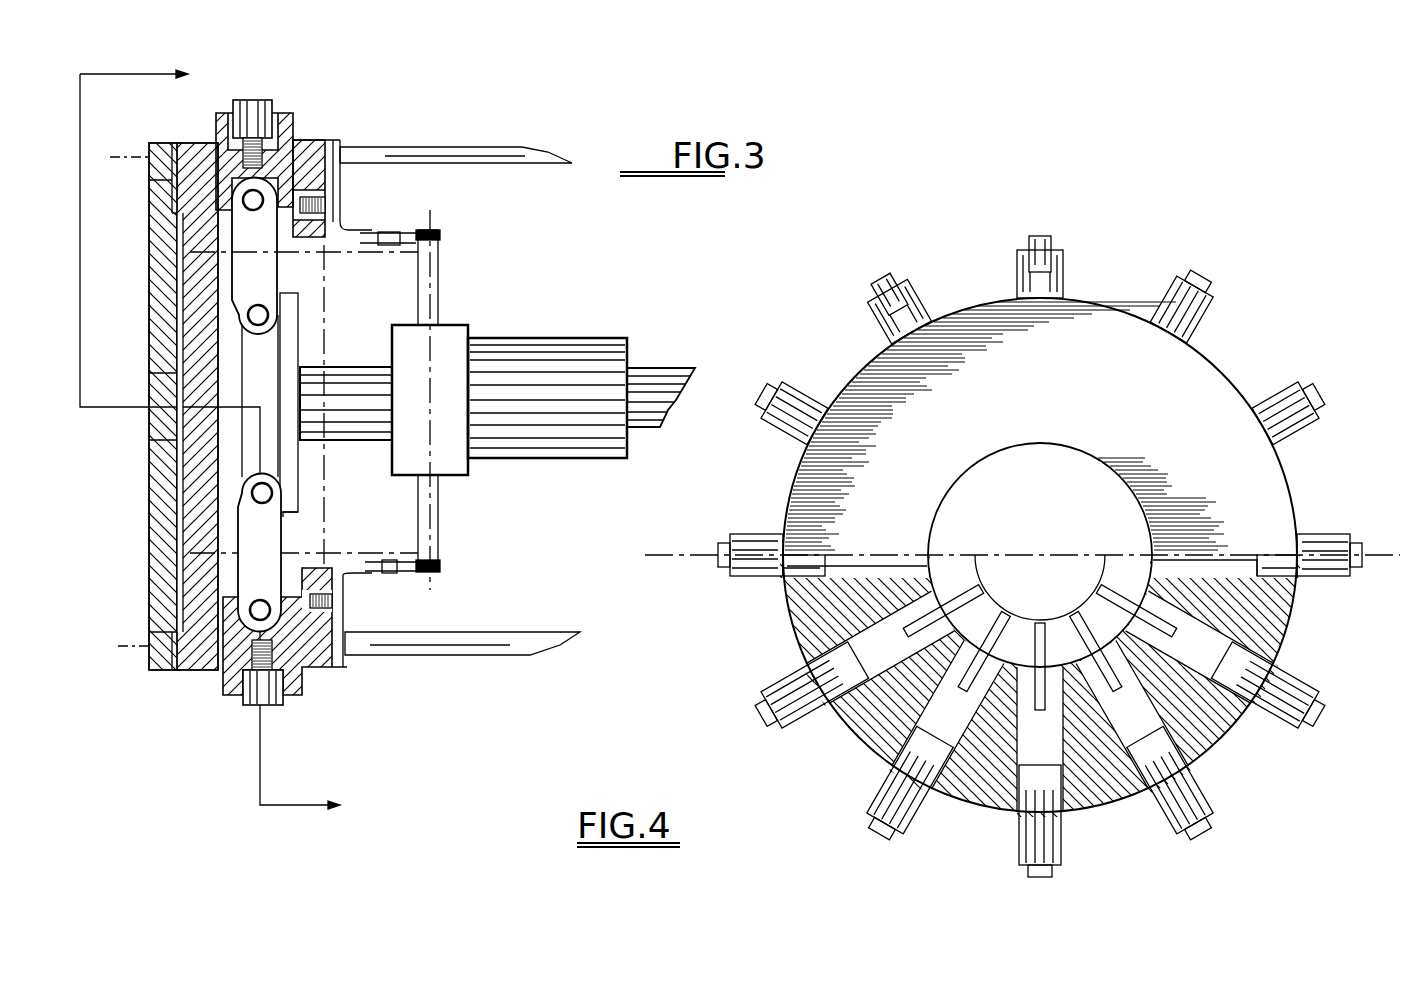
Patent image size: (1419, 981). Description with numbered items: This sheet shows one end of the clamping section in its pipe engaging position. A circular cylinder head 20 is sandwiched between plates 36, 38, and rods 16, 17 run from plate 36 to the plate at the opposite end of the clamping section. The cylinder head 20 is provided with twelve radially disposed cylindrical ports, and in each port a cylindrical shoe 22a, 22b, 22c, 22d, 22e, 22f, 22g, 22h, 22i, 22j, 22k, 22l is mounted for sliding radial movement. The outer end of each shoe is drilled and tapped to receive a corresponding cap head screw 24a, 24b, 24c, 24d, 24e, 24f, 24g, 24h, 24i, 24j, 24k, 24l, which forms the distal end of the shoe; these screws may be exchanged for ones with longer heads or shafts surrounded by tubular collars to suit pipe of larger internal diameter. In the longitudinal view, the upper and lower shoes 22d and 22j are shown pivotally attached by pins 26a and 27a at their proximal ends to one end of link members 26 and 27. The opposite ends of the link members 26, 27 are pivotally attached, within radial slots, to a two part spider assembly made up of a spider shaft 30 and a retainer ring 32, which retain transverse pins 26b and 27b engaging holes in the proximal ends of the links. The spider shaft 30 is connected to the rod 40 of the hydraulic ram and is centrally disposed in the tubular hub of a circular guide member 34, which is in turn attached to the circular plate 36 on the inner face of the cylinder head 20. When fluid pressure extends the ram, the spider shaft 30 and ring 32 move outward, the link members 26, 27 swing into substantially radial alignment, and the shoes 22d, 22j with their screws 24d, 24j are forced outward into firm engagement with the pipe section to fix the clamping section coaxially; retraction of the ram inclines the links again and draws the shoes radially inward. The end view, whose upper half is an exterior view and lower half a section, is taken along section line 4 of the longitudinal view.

In FIG. 3, the section line 4— 4 is at (225, 440).
In FIG. 3, the rod 16 is at (483, 148).
In FIG. 3, the rod 17 is at (487, 648).
In FIG. 4, the circular cylinder head 20 is at (1270, 618).
In FIG. 4, the cylindrical shoe 22a is at (768, 540).
In FIG. 4, the cylindrical shoe 22b is at (798, 410).
In FIG. 4, the cylindrical shoe 22c is at (915, 318).
In FIG. 3, the cylindrical shoe 22d is at (295, 132).
In FIG. 4, the cylindrical shoe 22d is at (1063, 278).
In FIG. 4, the cylindrical shoe 22e is at (1200, 310).
In FIG. 4, the cylindrical shoe 22f is at (1296, 418).
In FIG. 4, the cylindrical shoe 22g is at (1316, 565).
In FIG. 4, the cylindrical shoe 22h is at (1290, 708).
In FIG. 4, the cylindrical shoe 22i is at (1167, 808).
In FIG. 3, the cylindrical shoe 22j is at (301, 675).
In FIG. 4, the cylindrical shoe 22j is at (1024, 846).
In FIG. 4, the cylindrical shoe 22k is at (898, 797).
In FIG. 4, the cylindrical shoe 22l is at (792, 668).
In FIG. 4, the cap head screw 24a is at (722, 572).
In FIG. 4, the cap head screw 24b is at (762, 407).
In FIG. 4, the cap head screw 24c is at (878, 284).
In FIG. 3, the cap head screw 24d is at (253, 112).
In FIG. 4, the cap head screw 24d is at (1033, 255).
In FIG. 4, the cap head screw 24e is at (1198, 280).
In FIG. 4, the cap head screw 24f is at (1313, 396).
In FIG. 4, the cap head screw 24g is at (1362, 543).
In FIG. 4, the cap head screw 24h is at (1318, 713).
In FIG. 4, the cap head screw 24i is at (1200, 825).
In FIG. 3, the cap head screw 24j is at (245, 705).
In FIG. 4, the cap head screw 24j is at (1036, 872).
In FIG. 4, the cap head screw 24k is at (877, 833).
In FIG. 4, the cap head screw 24l is at (762, 718).
In FIG. 3, the link member 26 is at (258, 264).
In FIG. 3, the pin 26a is at (300, 205).
In FIG. 3, the transverse pin 26b is at (290, 320).
In FIG. 3, the link member 27 is at (268, 542).
In FIG. 4, the link member 27 is at (1043, 638).
In FIG. 3, the pin 27a is at (300, 602).
In FIG. 3, the transverse pin 27b is at (246, 492).
In FIG. 3, the spider shaft 30 is at (537, 338).
In FIG. 3, the retainer ring 32 is at (250, 380).
In FIG. 3, the circular guide member 34 is at (440, 265).
In FIG. 3, the plate 36 is at (310, 155).
In FIG. 3, the plate 38 is at (196, 143).
In FIG. 3, the rod 40 is at (631, 368).